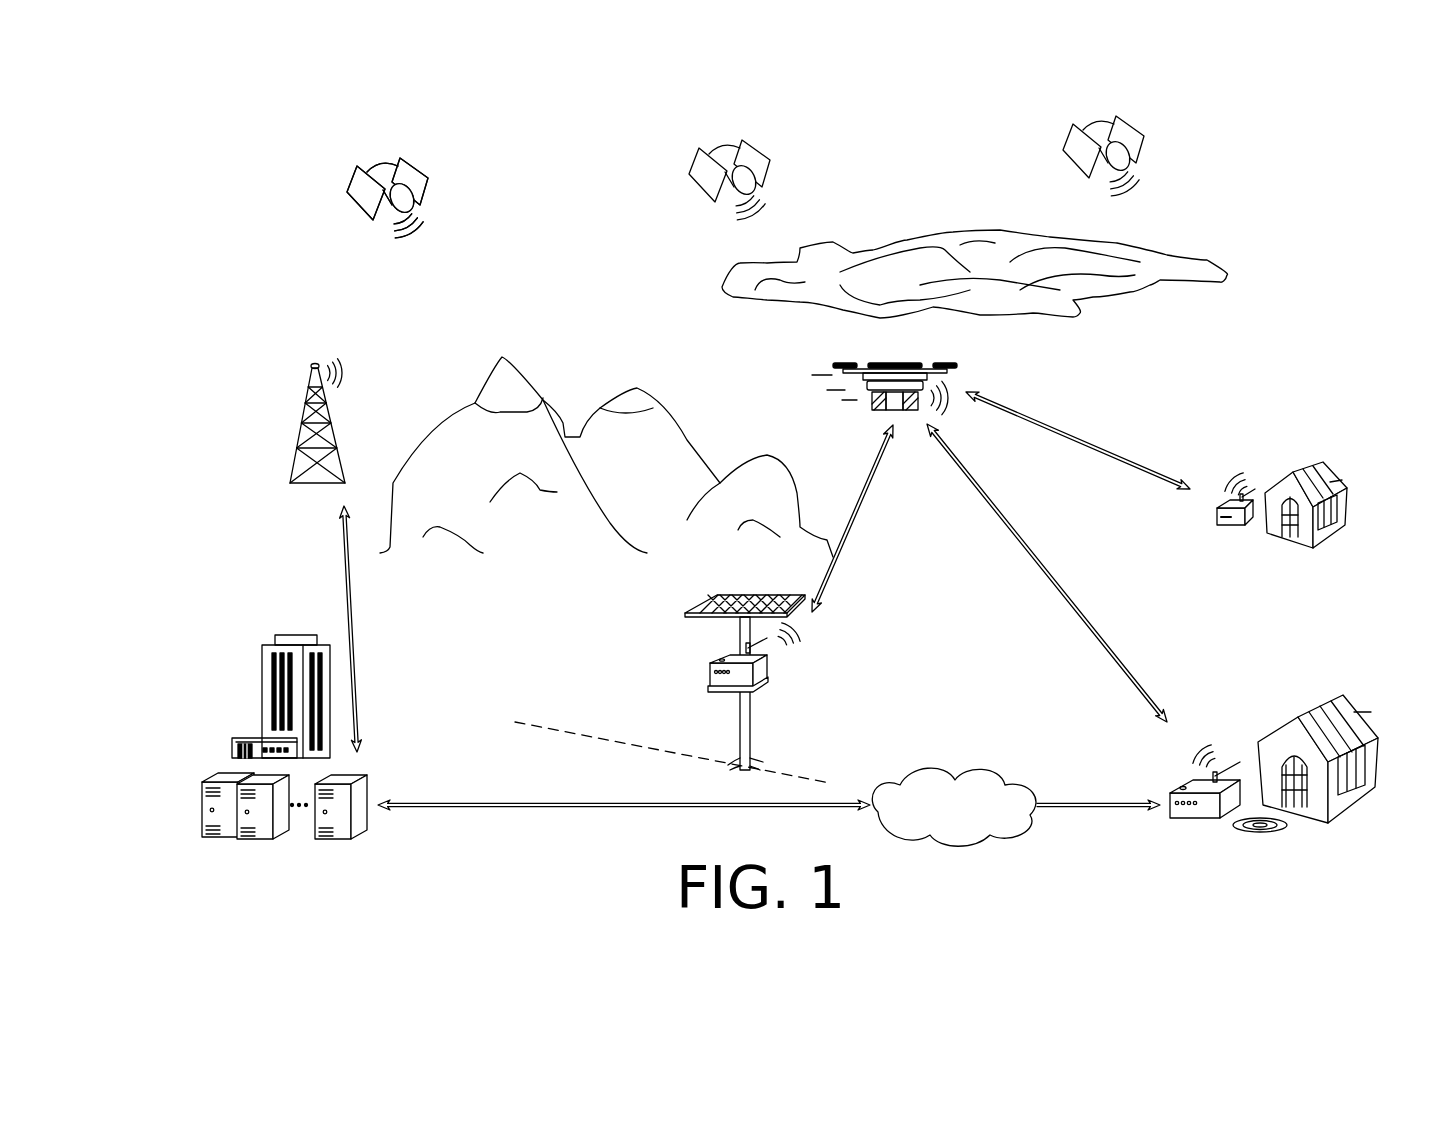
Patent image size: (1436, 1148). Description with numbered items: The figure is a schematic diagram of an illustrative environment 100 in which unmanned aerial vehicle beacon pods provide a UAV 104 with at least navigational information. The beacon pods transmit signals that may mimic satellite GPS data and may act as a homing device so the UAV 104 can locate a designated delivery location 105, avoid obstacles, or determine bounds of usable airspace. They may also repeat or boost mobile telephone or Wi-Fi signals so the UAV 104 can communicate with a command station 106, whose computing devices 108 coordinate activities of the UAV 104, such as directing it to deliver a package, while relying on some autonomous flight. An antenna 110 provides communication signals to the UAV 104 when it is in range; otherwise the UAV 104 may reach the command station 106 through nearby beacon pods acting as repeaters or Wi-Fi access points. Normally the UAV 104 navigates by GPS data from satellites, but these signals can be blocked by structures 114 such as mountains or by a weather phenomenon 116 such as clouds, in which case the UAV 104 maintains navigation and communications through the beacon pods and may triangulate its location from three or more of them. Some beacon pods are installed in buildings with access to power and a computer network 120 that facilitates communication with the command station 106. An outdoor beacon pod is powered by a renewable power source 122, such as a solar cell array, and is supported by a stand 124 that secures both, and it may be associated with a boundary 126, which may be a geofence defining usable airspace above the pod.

The environment 100 is at (236, 134).
The UAV 104 is at (832, 367).
The designated delivery location 105 is at (1255, 833).
The command station 106 is at (246, 684).
The computing devices 108 is at (228, 872).
The antenna 110 is at (303, 420).
The structures 114 is at (485, 320).
The weather phenomenon 116 is at (998, 208).
The computer network 120 is at (941, 823).
The renewable power source 122 is at (685, 612).
The stand 124 is at (818, 660).
The boundary 126 is at (540, 720).